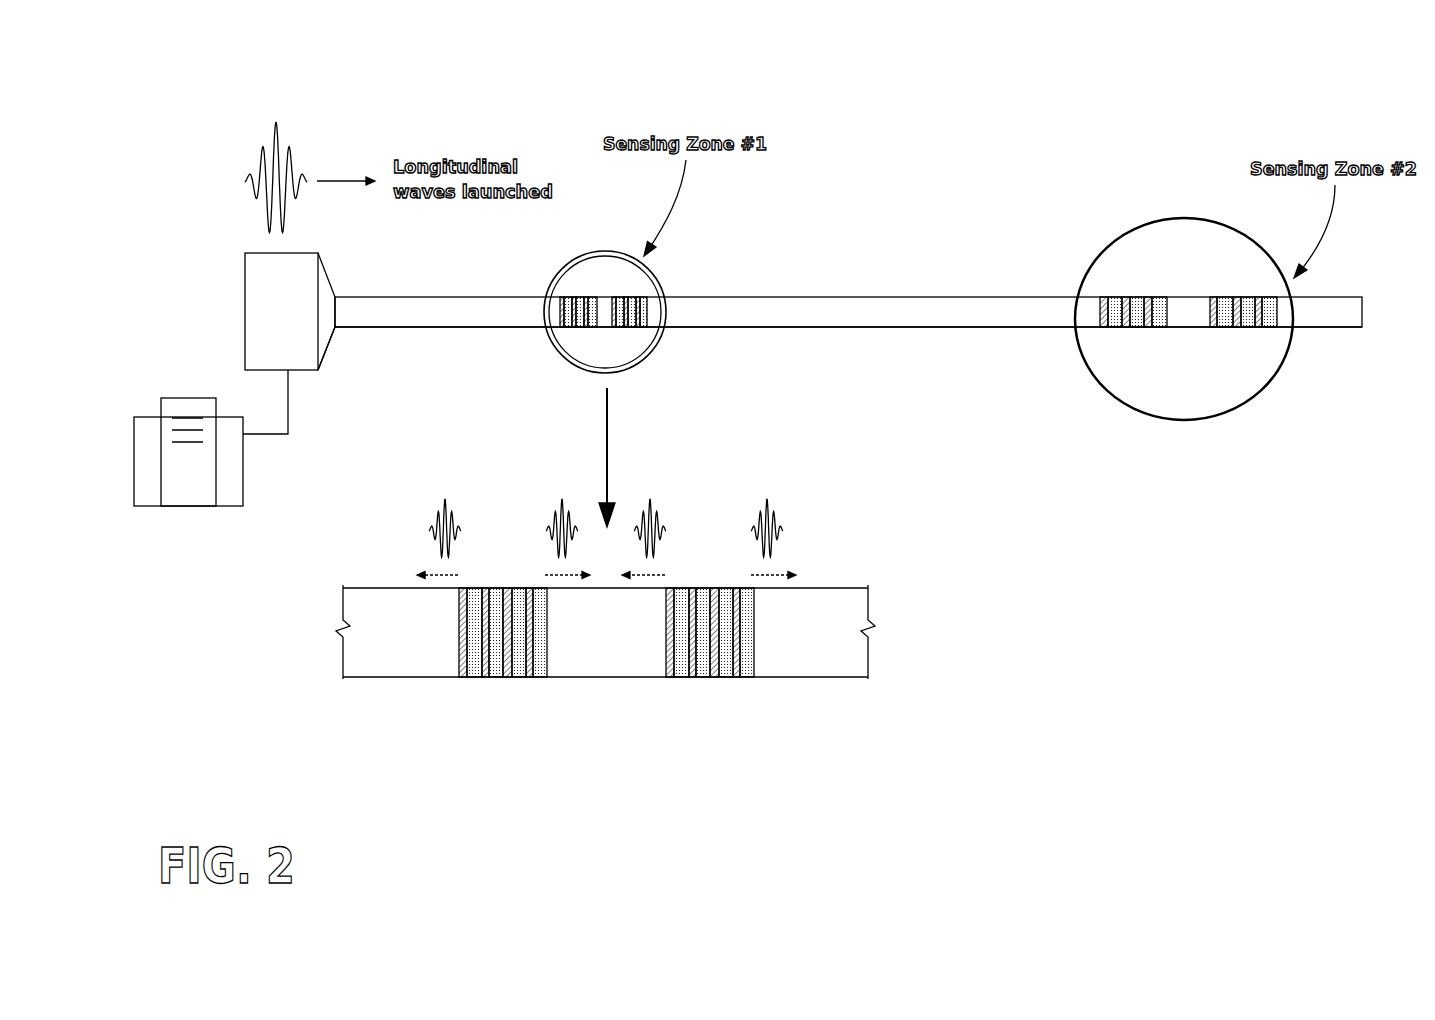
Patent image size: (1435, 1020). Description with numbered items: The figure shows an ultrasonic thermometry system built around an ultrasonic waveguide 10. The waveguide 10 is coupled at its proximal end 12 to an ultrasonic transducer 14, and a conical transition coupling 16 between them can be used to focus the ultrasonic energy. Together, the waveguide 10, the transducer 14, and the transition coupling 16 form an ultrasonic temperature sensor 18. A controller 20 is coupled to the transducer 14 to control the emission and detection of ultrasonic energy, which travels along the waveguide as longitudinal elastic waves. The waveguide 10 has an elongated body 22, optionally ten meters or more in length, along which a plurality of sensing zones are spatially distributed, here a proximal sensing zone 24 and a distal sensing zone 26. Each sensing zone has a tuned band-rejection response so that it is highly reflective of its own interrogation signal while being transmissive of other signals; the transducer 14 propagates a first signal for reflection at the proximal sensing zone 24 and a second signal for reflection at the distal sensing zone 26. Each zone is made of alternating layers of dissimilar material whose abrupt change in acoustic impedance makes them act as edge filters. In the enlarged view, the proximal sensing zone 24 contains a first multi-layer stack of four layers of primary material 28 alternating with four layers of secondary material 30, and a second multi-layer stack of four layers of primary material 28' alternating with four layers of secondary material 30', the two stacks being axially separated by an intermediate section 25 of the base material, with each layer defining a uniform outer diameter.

The ultrasonic waveguide 10 is at (930, 297).
The proximal end 12 is at (337, 295).
The ultrasonic transducer 14 is at (245, 293).
The conical transition coupling 16 is at (330, 345).
The ultrasonic temperature sensor 18 is at (803, 109).
The controller 20 is at (161, 410).
The elongated body 22 is at (858, 320).
The proximal sensing zone 24 is at (661, 279).
The intermediate section 25 is at (596, 649).
The distal sensing zone 26 is at (1148, 223).
The layers of the primary material 28 is at (794, 532).
The layers of the primary material 28' is at (952, 532).
The layers of the secondary material 30 is at (817, 460).
The layers of the secondary material 30' is at (975, 460).